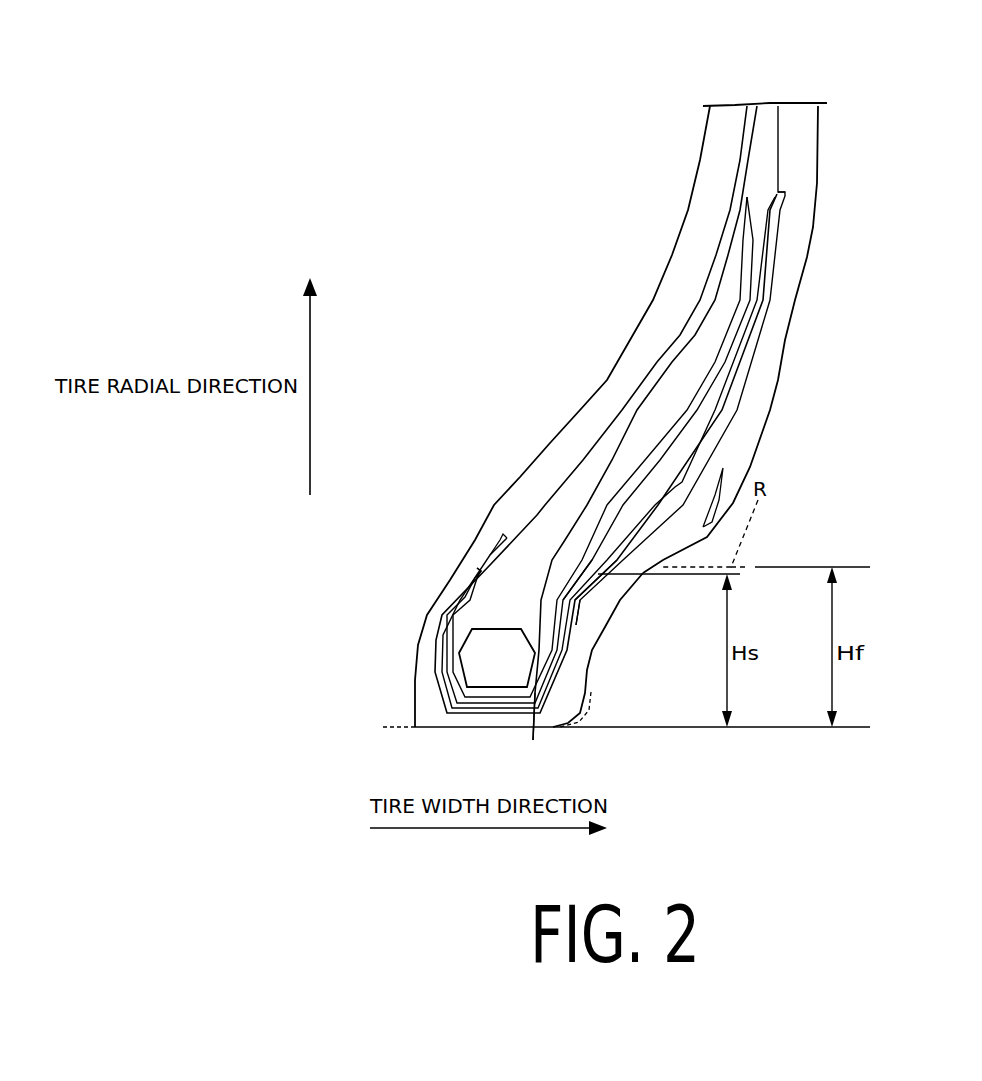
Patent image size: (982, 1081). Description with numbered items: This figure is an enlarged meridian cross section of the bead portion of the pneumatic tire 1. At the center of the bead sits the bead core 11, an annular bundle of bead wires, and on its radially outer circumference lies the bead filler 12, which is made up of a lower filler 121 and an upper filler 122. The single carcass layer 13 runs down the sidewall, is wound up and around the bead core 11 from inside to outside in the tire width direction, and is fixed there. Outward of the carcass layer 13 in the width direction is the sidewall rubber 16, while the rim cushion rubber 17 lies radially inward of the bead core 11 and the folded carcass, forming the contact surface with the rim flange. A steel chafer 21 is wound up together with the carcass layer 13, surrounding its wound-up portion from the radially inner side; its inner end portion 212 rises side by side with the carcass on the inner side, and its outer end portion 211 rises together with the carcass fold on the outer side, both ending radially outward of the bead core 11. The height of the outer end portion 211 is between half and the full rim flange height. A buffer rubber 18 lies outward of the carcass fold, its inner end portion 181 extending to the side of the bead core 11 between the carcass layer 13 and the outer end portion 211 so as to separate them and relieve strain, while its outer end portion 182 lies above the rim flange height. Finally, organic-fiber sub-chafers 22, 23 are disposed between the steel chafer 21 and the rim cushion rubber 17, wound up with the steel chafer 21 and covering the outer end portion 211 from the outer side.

The pneumatic tire 1 is at (637, 375).
The bead core 11 is at (498, 659).
The bead filler 12 is at (570, 423).
The lower filler 121 is at (563, 502).
The upper filler 122 is at (620, 450).
The carcass layer 13 is at (662, 362).
The sidewall rubber 16 is at (778, 333).
The rim cushion rubber 17 is at (585, 670).
The buffer rubber 18 is at (655, 435).
The inner end portion of buffer rubber 181 is at (533, 728).
The outer end portion of buffer rubber 182 is at (773, 254).
The steel chafer 21 is at (582, 632).
The outer end portion of steel chafer 211 is at (600, 572).
The inner end portion of steel chafer 212 is at (480, 573).
The sub-chafer 22 is at (593, 615).
The sub-chafer 23 is at (603, 588).